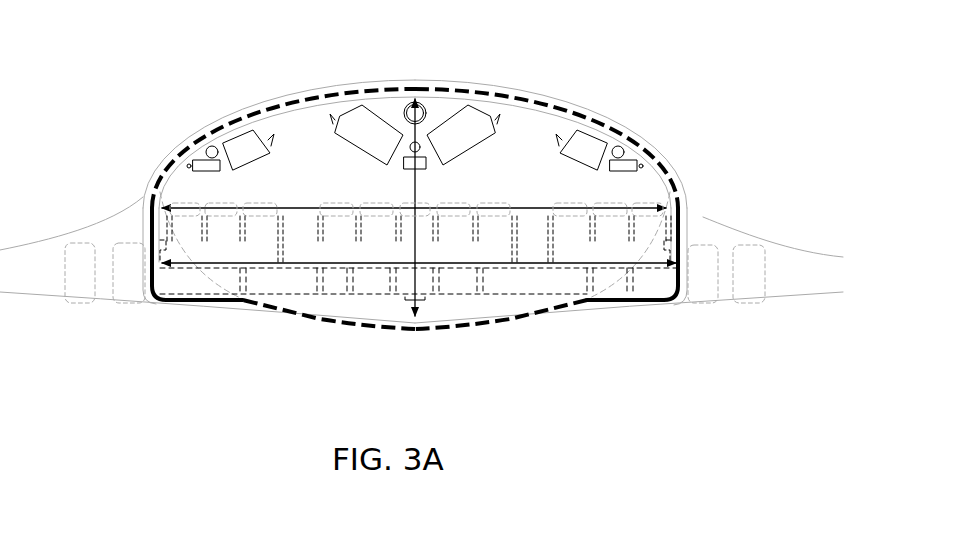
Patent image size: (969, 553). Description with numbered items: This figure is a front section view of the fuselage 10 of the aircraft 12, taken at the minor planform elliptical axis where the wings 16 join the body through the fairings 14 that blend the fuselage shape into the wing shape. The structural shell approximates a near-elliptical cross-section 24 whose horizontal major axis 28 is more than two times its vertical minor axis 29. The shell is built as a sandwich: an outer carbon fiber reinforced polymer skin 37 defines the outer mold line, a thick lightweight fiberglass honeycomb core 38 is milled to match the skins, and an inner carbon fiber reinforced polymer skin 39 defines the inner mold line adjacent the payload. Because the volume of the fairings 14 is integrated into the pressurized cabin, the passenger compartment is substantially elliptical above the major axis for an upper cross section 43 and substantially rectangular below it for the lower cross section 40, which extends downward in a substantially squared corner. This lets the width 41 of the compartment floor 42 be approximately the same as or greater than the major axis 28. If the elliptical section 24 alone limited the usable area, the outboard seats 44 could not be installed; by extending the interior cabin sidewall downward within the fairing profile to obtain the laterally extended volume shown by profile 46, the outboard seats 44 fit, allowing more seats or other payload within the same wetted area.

The fuselage 10 is at (278, 100).
The aircraft 12 is at (543, 63).
The fairings 14 is at (705, 217).
The wings 16 is at (818, 256).
The near-elliptical cross-section 24 is at (215, 128).
The cross section elliptical major axis 28 is at (497, 210).
The minor axis 29 is at (420, 184).
The outer carbon fiber reinforced polymer skin 37 is at (607, 118).
The core 38 is at (613, 123).
The inner carbon fiber reinforced polymer skin 39 is at (620, 137).
The lower cross section 40 is at (524, 245).
The width 41 is at (309, 250).
The compartment floor 42 is at (293, 292).
The upper cross section 43 is at (294, 153).
The outboard seats 44 is at (187, 242).
The profile 46 is at (683, 272).